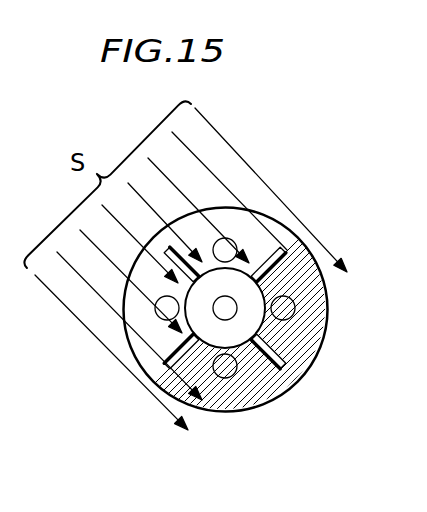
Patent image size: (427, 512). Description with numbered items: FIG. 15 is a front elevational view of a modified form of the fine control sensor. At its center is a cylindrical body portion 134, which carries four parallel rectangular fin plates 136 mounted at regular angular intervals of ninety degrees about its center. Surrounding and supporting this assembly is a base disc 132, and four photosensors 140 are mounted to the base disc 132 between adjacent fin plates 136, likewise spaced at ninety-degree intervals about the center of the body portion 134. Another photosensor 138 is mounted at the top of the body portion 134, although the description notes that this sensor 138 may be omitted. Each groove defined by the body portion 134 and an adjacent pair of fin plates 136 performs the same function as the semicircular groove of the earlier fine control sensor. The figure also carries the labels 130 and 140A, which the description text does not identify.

The housing 130 is at (335, 362).
The base disc 132 is at (320, 282).
The cylindrical body portion 134 is at (199, 265).
The fin plates 136 is at (287, 250).
The photosensor 138 is at (238, 294).
The photosensors 140 is at (225, 238).
The outlet aperture 140A is at (216, 412).